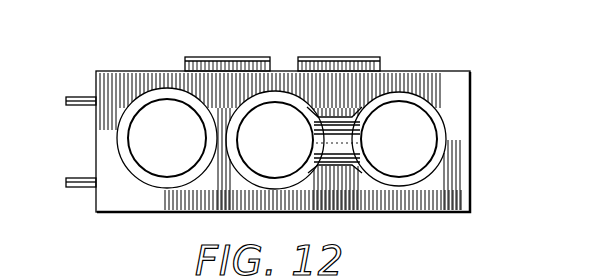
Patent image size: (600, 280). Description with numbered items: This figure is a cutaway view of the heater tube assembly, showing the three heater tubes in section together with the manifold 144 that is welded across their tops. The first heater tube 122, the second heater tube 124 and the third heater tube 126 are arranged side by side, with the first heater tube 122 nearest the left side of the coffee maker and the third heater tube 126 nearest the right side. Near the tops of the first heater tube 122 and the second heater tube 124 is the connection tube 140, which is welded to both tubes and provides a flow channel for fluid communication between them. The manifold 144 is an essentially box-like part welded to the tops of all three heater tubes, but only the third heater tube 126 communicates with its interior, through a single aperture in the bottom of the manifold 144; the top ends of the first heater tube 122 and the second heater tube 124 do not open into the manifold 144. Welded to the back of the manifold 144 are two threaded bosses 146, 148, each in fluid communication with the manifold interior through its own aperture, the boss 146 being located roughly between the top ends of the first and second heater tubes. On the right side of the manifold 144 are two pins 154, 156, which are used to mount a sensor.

The first heater tube 122 is at (448, 94).
The second heater tube 124 is at (310, 106).
The third heater tube 126 is at (172, 185).
The connection tube 140 is at (338, 168).
The manifold 144 is at (290, 158).
The boss 146 is at (373, 57).
The boss 148 is at (248, 57).
The pin 154 is at (77, 158).
The pin 156 is at (88, 78).